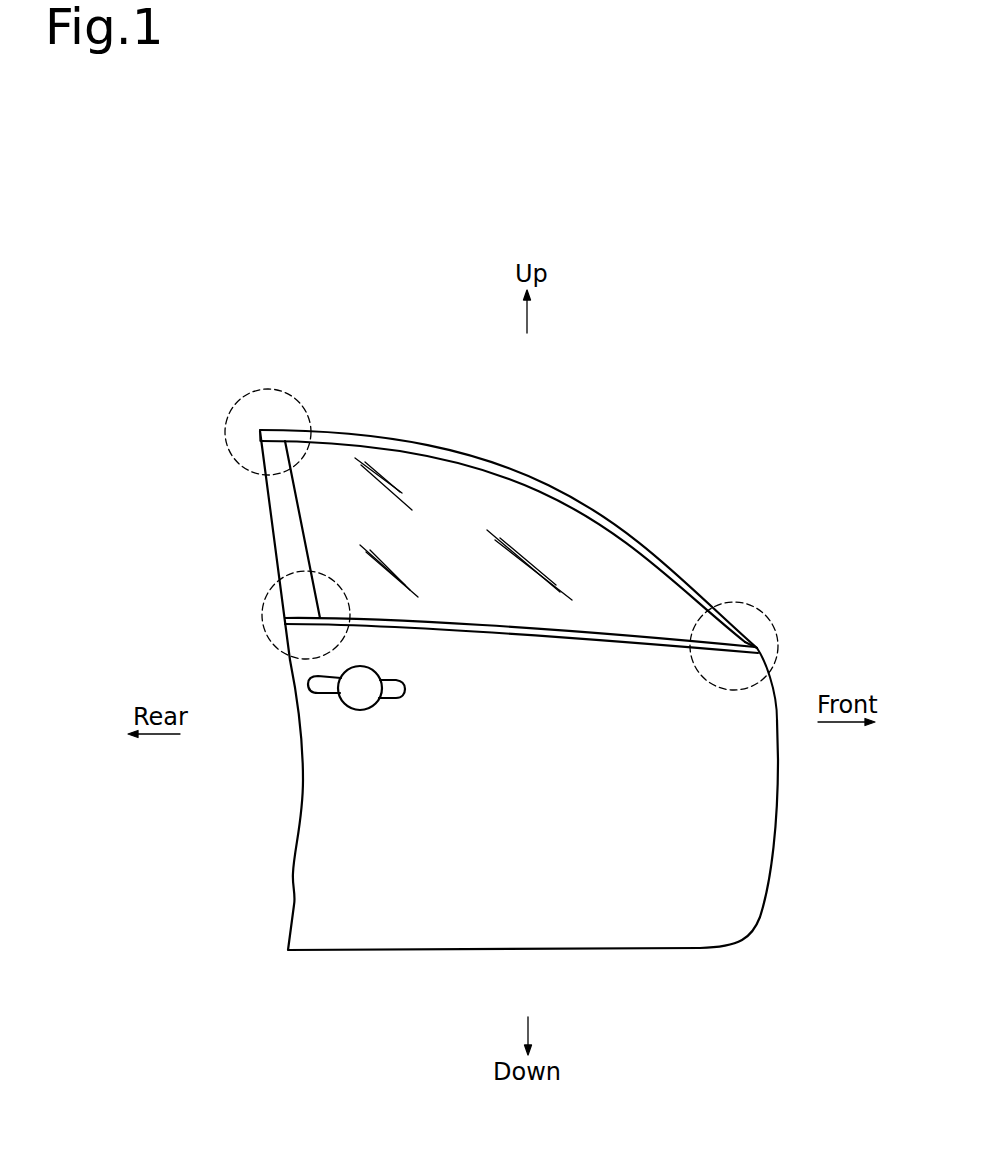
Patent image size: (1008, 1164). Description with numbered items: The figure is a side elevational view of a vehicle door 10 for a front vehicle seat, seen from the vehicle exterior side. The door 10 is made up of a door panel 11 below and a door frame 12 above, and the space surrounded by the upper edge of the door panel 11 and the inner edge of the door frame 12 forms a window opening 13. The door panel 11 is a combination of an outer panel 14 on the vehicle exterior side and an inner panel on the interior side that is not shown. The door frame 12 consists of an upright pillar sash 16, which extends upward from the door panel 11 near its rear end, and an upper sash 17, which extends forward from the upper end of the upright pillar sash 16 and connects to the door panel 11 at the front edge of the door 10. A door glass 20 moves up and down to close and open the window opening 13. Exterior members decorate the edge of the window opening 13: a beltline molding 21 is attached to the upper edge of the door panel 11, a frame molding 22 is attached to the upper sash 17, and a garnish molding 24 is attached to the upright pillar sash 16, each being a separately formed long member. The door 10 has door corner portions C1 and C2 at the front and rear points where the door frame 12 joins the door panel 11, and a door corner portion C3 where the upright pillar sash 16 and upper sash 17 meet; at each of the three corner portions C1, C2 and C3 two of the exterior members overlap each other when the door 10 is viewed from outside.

The door 10 is at (616, 465).
The door panel 11 is at (788, 798).
The door frame 12 is at (618, 512).
The window opening 13 is at (481, 465).
The outer panel 14 is at (687, 808).
The upright pillar sash 16 is at (266, 541).
The upper sash 17 is at (398, 430).
The door glass 20 is at (498, 512).
The beltline molding 21 is at (568, 633).
The frame molding 22 is at (695, 602).
The garnish molding 24 is at (280, 502).
The door corner portion C1 is at (782, 605).
The door corner portion C2 is at (245, 583).
The door corner portion C3 is at (222, 392).